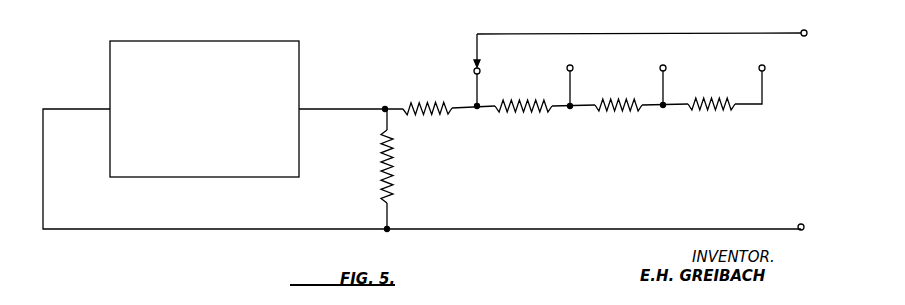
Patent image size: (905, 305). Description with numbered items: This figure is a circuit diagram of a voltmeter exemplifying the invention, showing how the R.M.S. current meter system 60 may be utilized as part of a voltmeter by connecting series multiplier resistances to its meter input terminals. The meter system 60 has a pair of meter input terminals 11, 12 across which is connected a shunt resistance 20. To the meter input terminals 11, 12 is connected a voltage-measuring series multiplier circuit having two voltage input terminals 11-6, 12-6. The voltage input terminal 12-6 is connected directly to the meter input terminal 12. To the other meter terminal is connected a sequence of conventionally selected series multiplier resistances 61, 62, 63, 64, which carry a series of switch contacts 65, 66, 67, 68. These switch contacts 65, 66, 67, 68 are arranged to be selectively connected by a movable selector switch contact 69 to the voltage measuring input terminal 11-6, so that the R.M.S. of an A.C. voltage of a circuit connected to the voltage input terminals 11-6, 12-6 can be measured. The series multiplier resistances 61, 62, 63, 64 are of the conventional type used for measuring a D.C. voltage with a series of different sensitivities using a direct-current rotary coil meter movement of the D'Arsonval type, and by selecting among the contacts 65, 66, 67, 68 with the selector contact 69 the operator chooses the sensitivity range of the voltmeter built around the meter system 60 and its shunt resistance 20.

The meter system 60 is at (193, 41).
The meter input terminal 11 is at (385, 100).
The meter input terminal 12 is at (387, 231).
The shunt resistance 20 is at (375, 171).
The series multiplier resistance 61 is at (439, 88).
The series multiplier resistance 62 is at (517, 113).
The series multiplier resistance 63 is at (606, 113).
The series multiplier resistance 64 is at (697, 108).
The switch contact 65 is at (482, 73).
The switch contact 66 is at (574, 68).
The switch contact 67 is at (667, 68).
The switch contact 68 is at (766, 68).
The movable selector switch contact 69 is at (480, 50).
The voltage input terminal 11-6 is at (812, 20).
The voltage input terminal 12-6 is at (810, 215).